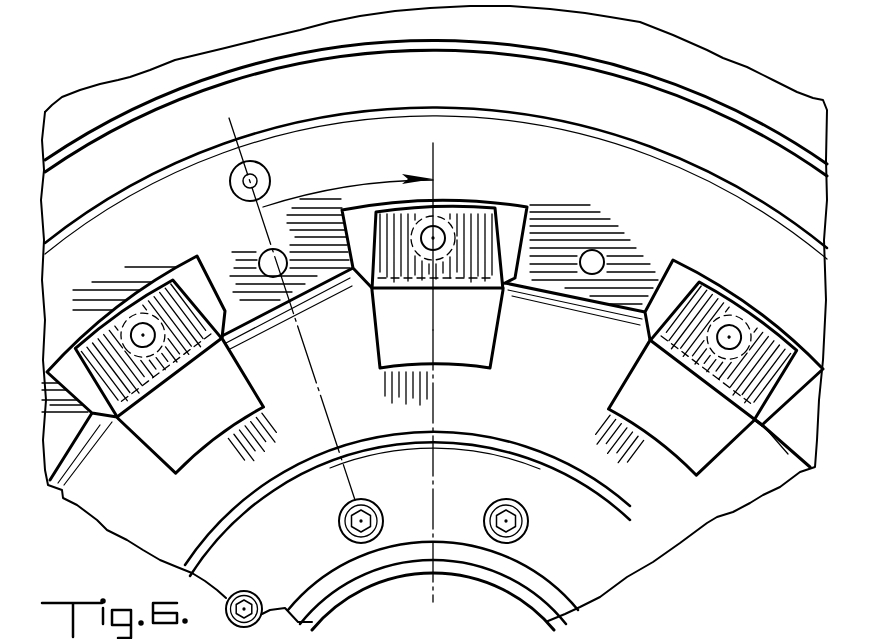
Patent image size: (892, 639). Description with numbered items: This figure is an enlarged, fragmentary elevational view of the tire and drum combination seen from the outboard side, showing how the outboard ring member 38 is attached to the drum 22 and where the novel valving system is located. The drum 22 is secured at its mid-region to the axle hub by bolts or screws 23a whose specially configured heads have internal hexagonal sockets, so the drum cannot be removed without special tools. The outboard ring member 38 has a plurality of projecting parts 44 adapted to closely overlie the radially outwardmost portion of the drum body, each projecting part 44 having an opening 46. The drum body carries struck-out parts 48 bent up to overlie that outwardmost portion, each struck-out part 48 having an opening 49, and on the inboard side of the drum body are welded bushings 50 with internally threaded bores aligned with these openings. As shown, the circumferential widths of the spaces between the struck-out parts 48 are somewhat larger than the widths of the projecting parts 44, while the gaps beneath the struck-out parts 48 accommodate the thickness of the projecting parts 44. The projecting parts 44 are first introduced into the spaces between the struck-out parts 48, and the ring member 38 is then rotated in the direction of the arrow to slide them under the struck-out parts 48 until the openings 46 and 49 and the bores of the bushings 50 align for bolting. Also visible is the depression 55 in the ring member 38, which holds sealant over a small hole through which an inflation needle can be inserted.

The drum 22 is at (717, 519).
The outboard ring member 38 is at (184, 82).
The projecting parts 44 is at (262, 298).
The opening 46 is at (260, 258).
The struck-out parts 48 is at (178, 266).
The opening 49 is at (738, 326).
The bushings 50 is at (150, 362).
The depression 55 is at (266, 172).
The bolts or screws 23a is at (258, 592).